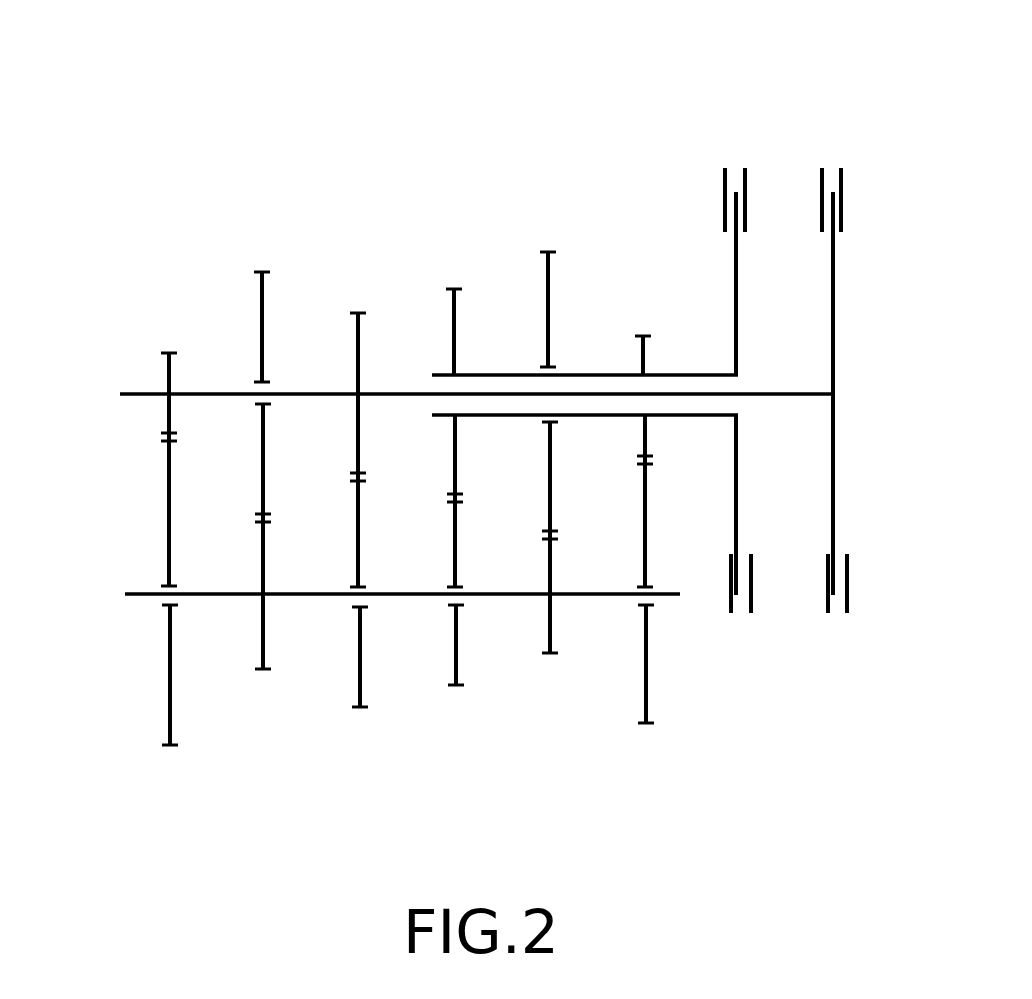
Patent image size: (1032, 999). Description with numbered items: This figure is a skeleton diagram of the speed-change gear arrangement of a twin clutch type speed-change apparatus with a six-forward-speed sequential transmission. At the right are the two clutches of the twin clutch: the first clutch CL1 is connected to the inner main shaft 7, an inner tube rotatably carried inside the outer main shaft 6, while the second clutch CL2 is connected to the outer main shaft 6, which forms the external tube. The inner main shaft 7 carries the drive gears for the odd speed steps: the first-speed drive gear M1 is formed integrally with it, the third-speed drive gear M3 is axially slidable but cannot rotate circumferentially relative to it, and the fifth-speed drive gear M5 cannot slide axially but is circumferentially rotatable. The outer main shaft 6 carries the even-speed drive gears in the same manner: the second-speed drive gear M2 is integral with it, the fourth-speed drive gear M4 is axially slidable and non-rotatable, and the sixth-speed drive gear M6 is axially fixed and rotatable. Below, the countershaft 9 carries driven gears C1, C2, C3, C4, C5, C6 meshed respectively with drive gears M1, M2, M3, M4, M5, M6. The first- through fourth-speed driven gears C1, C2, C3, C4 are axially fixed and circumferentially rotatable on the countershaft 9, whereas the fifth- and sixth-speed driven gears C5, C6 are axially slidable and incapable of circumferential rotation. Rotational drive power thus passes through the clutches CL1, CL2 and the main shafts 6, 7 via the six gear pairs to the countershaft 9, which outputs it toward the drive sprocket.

The outer main shaft 6 is at (695, 373).
The inner main shaft 7 is at (778, 394).
The countershaft 9 is at (143, 596).
The first clutch CL1 is at (830, 142).
The second clutch CL2 is at (736, 142).
The first-speed drive gear M1 is at (165, 383).
The second-speed drive gear M2 is at (637, 367).
The third-speed drive gear M3 is at (353, 378).
The fourth-speed drive gear M4 is at (450, 350).
The fifth-speed drive gear M5 is at (257, 347).
The sixth-speed drive gear M6 is at (543, 320).
The first-speed driven gear C1 is at (172, 683).
The second-speed driven gear C2 is at (650, 688).
The third-speed driven gear C3 is at (363, 673).
The fourth-speed driven gear C4 is at (460, 643).
The fifth-speed driven gear C5 is at (267, 633).
The sixth-speed driven gear C6 is at (553, 622).